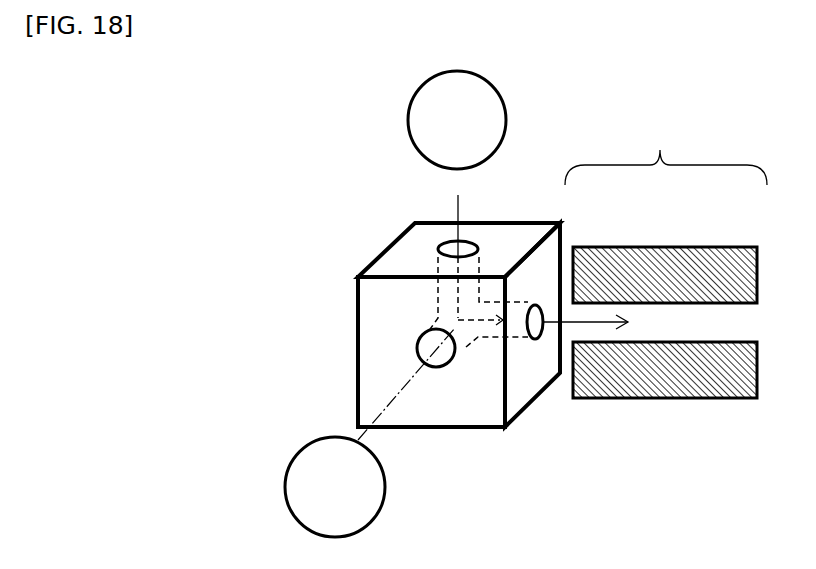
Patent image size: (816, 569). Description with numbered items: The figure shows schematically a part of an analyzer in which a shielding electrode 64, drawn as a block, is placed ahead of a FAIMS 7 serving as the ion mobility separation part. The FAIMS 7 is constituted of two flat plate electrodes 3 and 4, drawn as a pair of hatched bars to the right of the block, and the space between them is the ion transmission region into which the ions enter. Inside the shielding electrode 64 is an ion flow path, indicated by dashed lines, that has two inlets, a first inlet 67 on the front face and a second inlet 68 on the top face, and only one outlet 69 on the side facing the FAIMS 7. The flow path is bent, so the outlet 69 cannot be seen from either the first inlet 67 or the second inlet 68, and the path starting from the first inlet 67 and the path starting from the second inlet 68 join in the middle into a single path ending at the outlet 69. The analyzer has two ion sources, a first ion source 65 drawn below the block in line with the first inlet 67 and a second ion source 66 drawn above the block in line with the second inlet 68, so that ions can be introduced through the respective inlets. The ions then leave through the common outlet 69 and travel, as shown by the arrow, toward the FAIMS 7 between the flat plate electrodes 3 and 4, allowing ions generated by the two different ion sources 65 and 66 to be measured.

The shielding electrode 64 is at (383, 308).
The first ion source 65 is at (335, 487).
The second ion source 66 is at (457, 164).
The first inlet 67 is at (418, 352).
The second inlet 68 is at (441, 249).
The outlet 69 is at (537, 340).
The flat plate electrode 3 is at (660, 247).
The flat plate electrode 4 is at (675, 398).
The FAIMS 7 is at (666, 152).